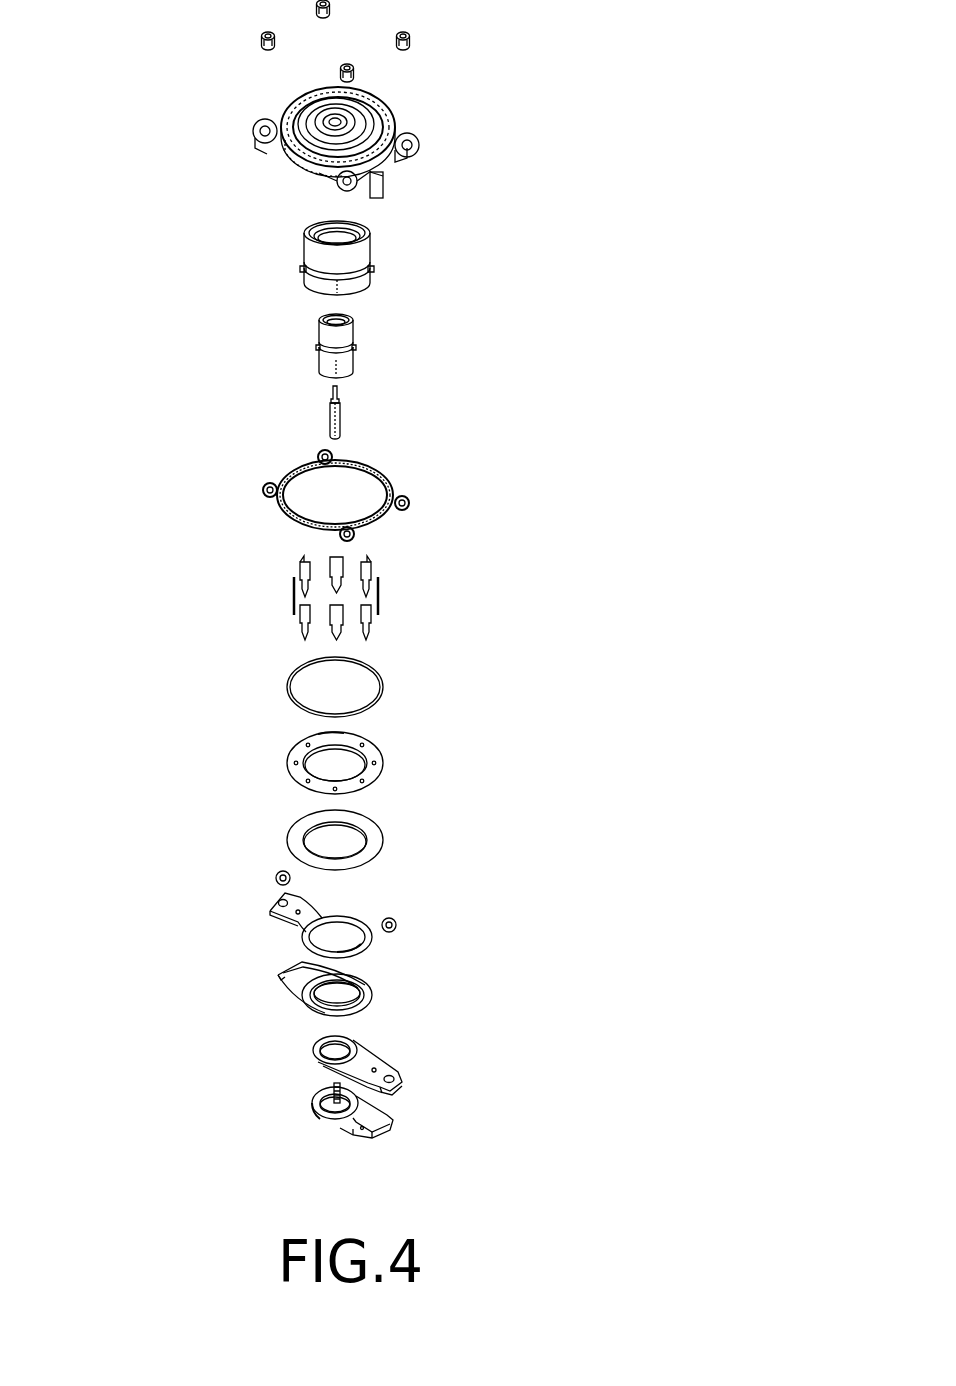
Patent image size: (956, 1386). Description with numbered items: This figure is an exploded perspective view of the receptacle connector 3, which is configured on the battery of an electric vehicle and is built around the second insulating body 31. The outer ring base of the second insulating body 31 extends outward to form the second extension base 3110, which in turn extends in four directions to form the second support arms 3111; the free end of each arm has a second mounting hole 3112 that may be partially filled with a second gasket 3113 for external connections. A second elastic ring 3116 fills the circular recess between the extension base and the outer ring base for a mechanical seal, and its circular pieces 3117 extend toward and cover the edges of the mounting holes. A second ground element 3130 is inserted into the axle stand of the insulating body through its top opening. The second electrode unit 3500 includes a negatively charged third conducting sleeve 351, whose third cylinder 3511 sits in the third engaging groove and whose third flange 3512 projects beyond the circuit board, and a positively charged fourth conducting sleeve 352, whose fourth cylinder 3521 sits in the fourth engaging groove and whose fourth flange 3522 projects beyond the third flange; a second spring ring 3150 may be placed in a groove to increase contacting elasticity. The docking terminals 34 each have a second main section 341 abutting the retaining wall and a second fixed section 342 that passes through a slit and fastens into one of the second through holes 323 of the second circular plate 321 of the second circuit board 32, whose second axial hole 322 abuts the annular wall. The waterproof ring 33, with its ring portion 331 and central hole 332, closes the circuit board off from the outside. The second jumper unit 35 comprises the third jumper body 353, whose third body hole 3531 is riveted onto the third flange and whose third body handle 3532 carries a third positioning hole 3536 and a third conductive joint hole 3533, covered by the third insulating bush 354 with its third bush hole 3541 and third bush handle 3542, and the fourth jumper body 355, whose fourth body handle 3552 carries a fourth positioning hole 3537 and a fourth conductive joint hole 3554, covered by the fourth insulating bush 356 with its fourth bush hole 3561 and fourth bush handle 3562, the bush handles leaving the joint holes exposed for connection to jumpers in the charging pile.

The receptacle connector 3 is at (751, 133).
The second insulating body 31 is at (563, 194).
The second extension base 3110 is at (290, 170).
The second support arms 3111 is at (270, 122).
The second mounting hole 3112 is at (275, 128).
The second gasket 3113 is at (412, 45).
The second elastic ring 3116 is at (388, 481).
The circular pieces 3117 is at (413, 508).
The second ground element 3130 is at (328, 418).
The second spring ring 3150 is at (382, 683).
The second electrode unit 3500 is at (663, 375).
The third conducting sleeve 351 is at (135, 278).
The third cylinder 3511 is at (295, 255).
The third flange 3512 is at (318, 296).
The fourth conducting sleeve 352 is at (520, 366).
The fourth cylinder 3521 is at (352, 355).
The fourth flange 3522 is at (350, 378).
The docking terminals 34 is at (578, 629).
The second main section 341 is at (367, 608).
The second fixed section 342 is at (367, 632).
The second circuit board 32 is at (578, 800).
The second circular plate 321 is at (382, 752).
The second axial hole 322 is at (367, 772).
The second through holes 323 is at (293, 762).
The waterproof ring 33 is at (578, 878).
The ring portion 331 is at (378, 837).
The central hole 332 is at (360, 855).
The second jumper unit 35 is at (578, 1030).
The third jumper body 353 is at (372, 940).
The third body hole 3531 is at (363, 948).
The third body handle 3532 is at (270, 910).
The third conductive joint hole 3533 is at (277, 900).
The third positioning hole 3536 is at (297, 915).
The third insulating bush 354 is at (377, 1003).
The third bush hole 3541 is at (307, 1013).
The third bush handle 3542 is at (298, 975).
The fourth jumper body 355 is at (313, 1050).
The fourth positioning hole 3537 is at (377, 1063).
The fourth conductive joint hole 3554 is at (393, 1080).
The fourth body handle 3552 is at (387, 1090).
The fourth insulating bush 356 is at (333, 1120).
The fourth bush hole 3561 is at (320, 1108).
The fourth bush handle 3562 is at (375, 1125).